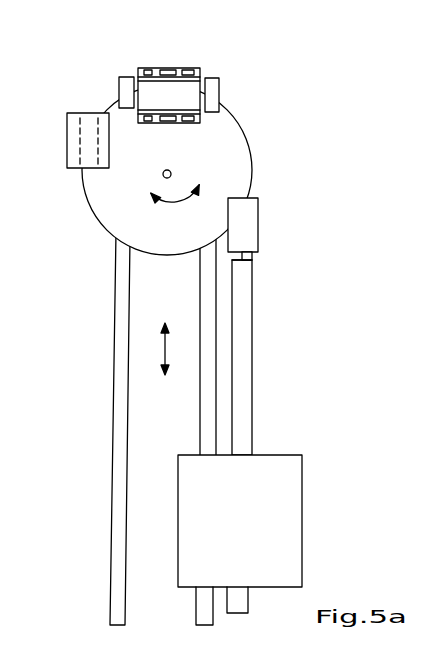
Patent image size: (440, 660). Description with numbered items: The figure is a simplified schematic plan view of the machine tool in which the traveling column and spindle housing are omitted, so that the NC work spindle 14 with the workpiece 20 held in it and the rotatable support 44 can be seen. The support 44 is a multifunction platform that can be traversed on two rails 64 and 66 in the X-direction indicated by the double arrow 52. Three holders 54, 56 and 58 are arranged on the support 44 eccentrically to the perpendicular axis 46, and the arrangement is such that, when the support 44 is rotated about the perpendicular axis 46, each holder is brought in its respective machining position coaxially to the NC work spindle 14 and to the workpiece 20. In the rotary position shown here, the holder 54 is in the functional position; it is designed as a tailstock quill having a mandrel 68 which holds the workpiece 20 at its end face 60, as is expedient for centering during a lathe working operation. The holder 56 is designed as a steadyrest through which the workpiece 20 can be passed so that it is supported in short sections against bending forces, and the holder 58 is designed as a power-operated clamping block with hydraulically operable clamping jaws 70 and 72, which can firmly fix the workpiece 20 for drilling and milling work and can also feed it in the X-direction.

The NC work spindle 14 is at (282, 533).
The workpiece 20 is at (243, 380).
The support 44 is at (233, 183).
The perpendicular axis 46 is at (171, 172).
The X-direction 52 is at (167, 352).
The holder 54 is at (250, 230).
The holder 56 is at (88, 128).
The holder 58 is at (201, 101).
The end face 60 is at (252, 259).
The rail 64 is at (205, 425).
The rail 66 is at (118, 477).
The mandrel 68 is at (247, 257).
The clamping jaw 70 is at (148, 80).
The clamping jaw 72 is at (150, 112).